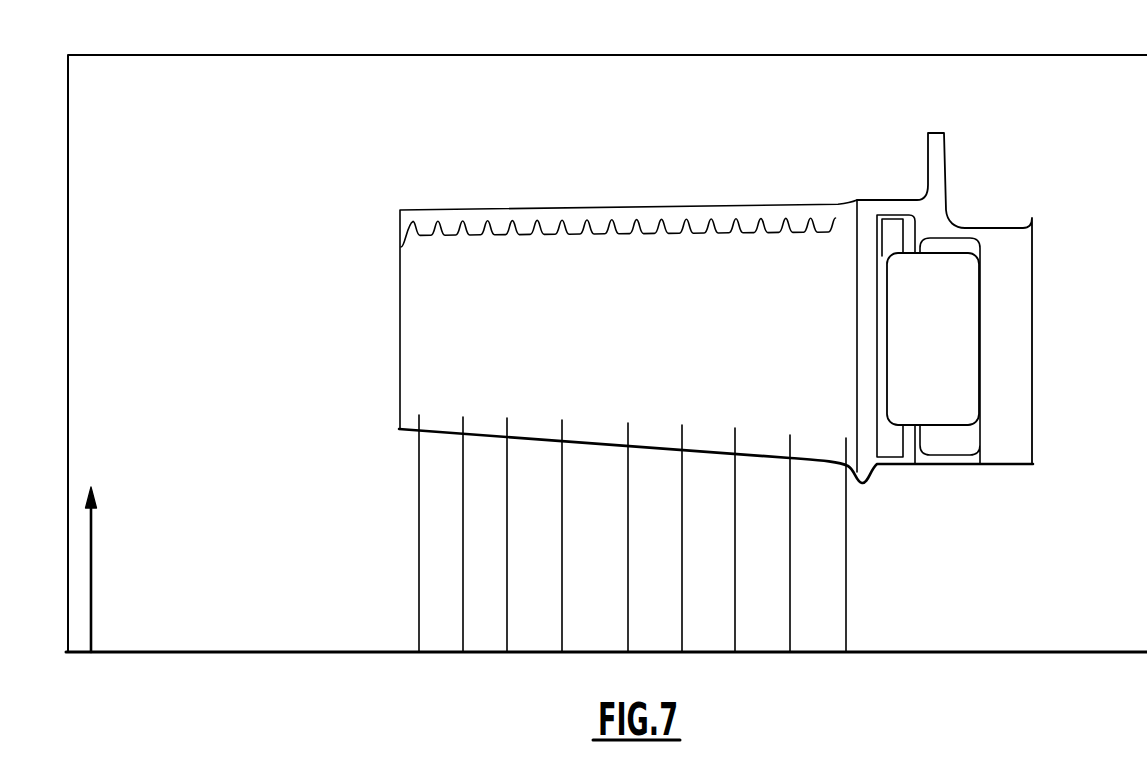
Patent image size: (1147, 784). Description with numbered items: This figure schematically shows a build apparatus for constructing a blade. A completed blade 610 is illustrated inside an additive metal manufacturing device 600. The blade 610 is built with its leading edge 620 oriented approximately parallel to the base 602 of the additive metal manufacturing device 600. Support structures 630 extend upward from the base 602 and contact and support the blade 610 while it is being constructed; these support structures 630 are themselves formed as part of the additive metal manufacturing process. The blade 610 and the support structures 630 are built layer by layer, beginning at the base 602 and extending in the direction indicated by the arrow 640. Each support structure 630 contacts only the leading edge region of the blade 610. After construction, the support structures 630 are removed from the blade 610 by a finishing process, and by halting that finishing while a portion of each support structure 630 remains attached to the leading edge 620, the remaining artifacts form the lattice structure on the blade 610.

The additive metal manufacturing device 600 is at (1062, 53).
The base 602 is at (945, 651).
The blade 610 is at (711, 176).
The leading edge 620 is at (590, 438).
The support structures 630 is at (418, 557).
The arrow 640 is at (93, 558).